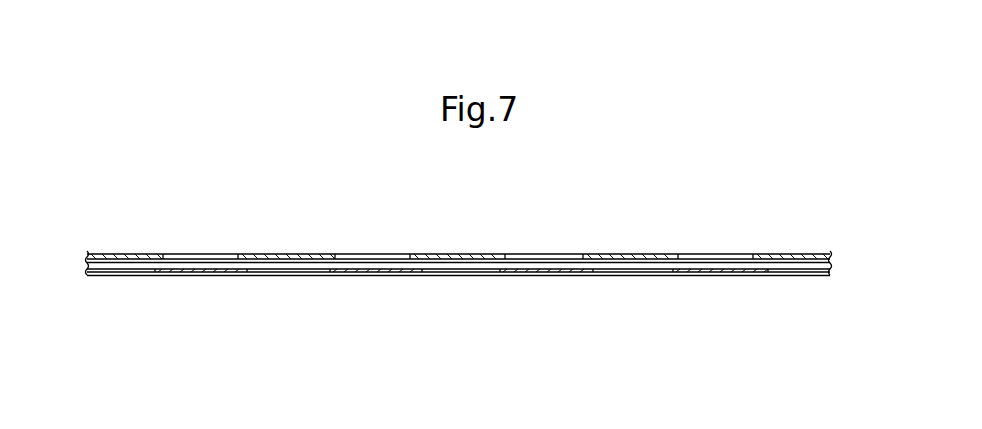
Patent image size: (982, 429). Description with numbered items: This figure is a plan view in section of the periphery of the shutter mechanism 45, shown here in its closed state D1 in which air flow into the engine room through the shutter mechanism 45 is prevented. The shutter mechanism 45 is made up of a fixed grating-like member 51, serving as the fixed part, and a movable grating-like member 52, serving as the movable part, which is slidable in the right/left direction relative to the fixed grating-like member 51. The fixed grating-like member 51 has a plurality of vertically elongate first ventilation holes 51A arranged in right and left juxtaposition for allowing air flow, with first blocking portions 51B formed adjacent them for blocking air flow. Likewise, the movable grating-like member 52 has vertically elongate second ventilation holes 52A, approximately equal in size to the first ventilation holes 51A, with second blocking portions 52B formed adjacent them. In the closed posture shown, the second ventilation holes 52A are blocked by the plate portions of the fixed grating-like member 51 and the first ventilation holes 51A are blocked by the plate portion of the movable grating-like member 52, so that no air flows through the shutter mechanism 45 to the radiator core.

The shutter mechanism 45 is at (156, 212).
The fixed grating-like member 51 is at (789, 241).
The first ventilation holes 51A is at (223, 253).
The first blocking portions 51B is at (295, 255).
The movable grating-like member 52 is at (164, 302).
The second ventilation holes 52A is at (484, 273).
The second blocking portions 52B is at (367, 275).